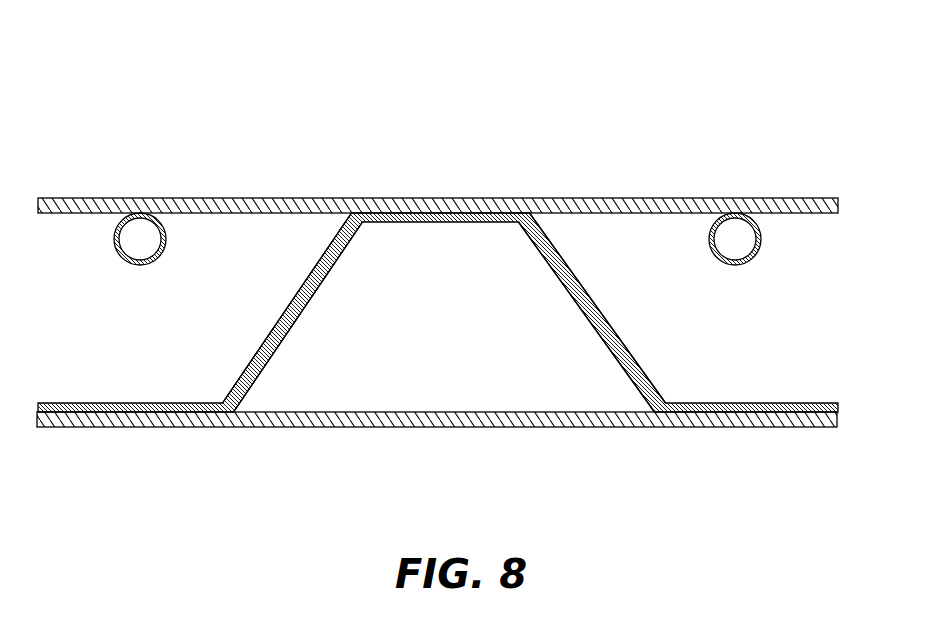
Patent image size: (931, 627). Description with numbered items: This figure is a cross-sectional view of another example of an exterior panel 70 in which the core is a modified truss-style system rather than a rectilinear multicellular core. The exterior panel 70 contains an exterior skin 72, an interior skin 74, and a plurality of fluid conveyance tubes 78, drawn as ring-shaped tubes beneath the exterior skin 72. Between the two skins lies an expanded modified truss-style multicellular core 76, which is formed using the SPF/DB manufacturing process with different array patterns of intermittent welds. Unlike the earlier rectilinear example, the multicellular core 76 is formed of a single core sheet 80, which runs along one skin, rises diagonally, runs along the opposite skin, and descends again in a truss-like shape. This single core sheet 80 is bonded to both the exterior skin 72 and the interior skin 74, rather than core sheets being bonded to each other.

The exterior panel 70 is at (688, 98).
The exterior skin 72 is at (513, 198).
The interior skin 74 is at (568, 427).
The expanded modified truss-style multicellular core 76 is at (438, 312).
The fluid conveyance tubes 78 is at (122, 221).
The single core sheet 80 is at (286, 310).